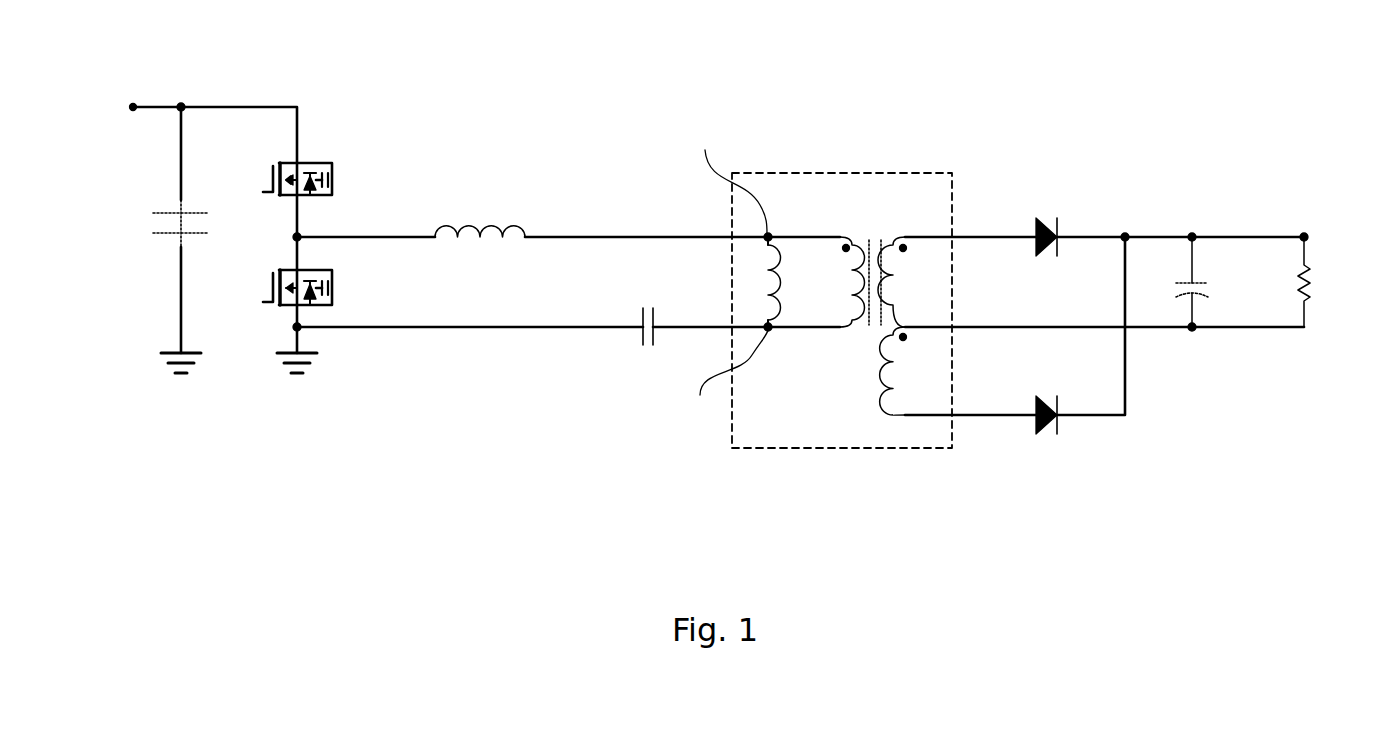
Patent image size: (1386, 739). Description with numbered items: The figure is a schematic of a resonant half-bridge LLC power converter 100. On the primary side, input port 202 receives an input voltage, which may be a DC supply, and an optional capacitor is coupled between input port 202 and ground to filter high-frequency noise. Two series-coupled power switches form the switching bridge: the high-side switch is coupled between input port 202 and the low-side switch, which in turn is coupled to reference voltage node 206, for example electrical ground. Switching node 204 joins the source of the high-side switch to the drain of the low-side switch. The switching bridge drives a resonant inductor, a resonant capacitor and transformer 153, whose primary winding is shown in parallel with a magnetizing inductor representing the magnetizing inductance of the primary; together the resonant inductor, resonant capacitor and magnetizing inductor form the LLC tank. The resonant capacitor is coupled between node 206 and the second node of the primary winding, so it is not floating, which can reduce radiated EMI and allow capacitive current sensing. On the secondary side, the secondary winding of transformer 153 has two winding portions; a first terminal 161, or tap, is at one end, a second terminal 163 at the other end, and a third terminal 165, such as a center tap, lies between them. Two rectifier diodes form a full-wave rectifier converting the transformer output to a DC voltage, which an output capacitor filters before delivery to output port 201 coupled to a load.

The resonant half-bridge LLC power converter 100 is at (782, 80).
The transformer 153 is at (942, 173).
The first terminal 161 is at (973, 237).
The second terminal 163 is at (973, 417).
The third terminal 165 is at (970, 327).
The output port 201 is at (1304, 236).
The input port 202 is at (181, 105).
The switching node 204 is at (300, 235).
The reference voltage node 206 is at (300, 325).